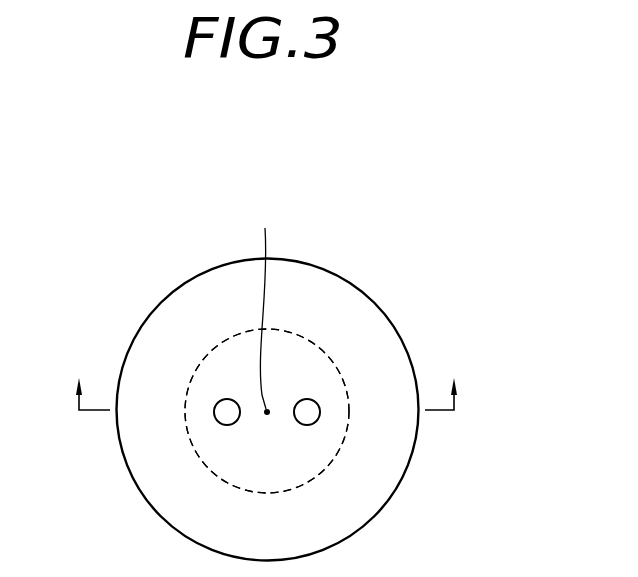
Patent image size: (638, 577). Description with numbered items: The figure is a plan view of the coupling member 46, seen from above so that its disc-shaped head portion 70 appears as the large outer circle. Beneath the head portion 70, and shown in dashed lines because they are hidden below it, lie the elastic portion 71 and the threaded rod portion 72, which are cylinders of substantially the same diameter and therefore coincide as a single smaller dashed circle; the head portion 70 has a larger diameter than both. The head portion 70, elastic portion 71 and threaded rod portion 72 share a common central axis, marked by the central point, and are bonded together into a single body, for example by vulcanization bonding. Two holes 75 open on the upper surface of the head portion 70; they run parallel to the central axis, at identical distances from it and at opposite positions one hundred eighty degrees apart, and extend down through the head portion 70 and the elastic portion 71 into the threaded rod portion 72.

The coupling member 46 is at (339, 236).
The head portion 70 is at (396, 354).
The elastic portion 71 is at (340, 448).
The threaded rod portion 72 is at (349, 411).
The holes 75 is at (216, 413).